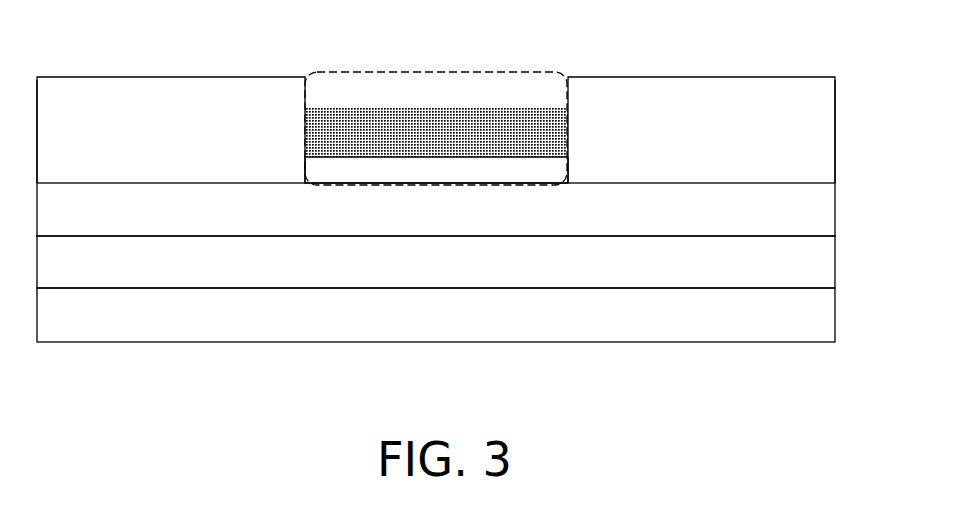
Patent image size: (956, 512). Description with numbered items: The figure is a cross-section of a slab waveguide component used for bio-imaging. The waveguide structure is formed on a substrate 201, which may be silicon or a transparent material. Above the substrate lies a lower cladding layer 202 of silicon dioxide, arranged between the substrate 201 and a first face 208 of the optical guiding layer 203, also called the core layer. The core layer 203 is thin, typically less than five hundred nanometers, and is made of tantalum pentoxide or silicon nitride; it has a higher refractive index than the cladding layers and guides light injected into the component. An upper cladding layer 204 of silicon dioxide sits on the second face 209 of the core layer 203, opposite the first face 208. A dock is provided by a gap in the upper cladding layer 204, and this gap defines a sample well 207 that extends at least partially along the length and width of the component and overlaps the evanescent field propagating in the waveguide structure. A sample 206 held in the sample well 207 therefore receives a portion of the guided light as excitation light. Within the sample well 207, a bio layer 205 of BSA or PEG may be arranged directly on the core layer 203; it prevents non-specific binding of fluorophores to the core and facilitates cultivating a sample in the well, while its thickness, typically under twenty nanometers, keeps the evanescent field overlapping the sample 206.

The substrate 201 is at (737, 327).
The lower cladding layer 202 is at (621, 273).
The optical guiding layer 203 is at (755, 197).
The upper cladding layer 204 is at (198, 107).
The bio layer 205 is at (432, 172).
The sample 206 is at (358, 122).
The sample well 207 is at (432, 72).
The first face 208 is at (120, 236).
The second face 209 is at (88, 183).